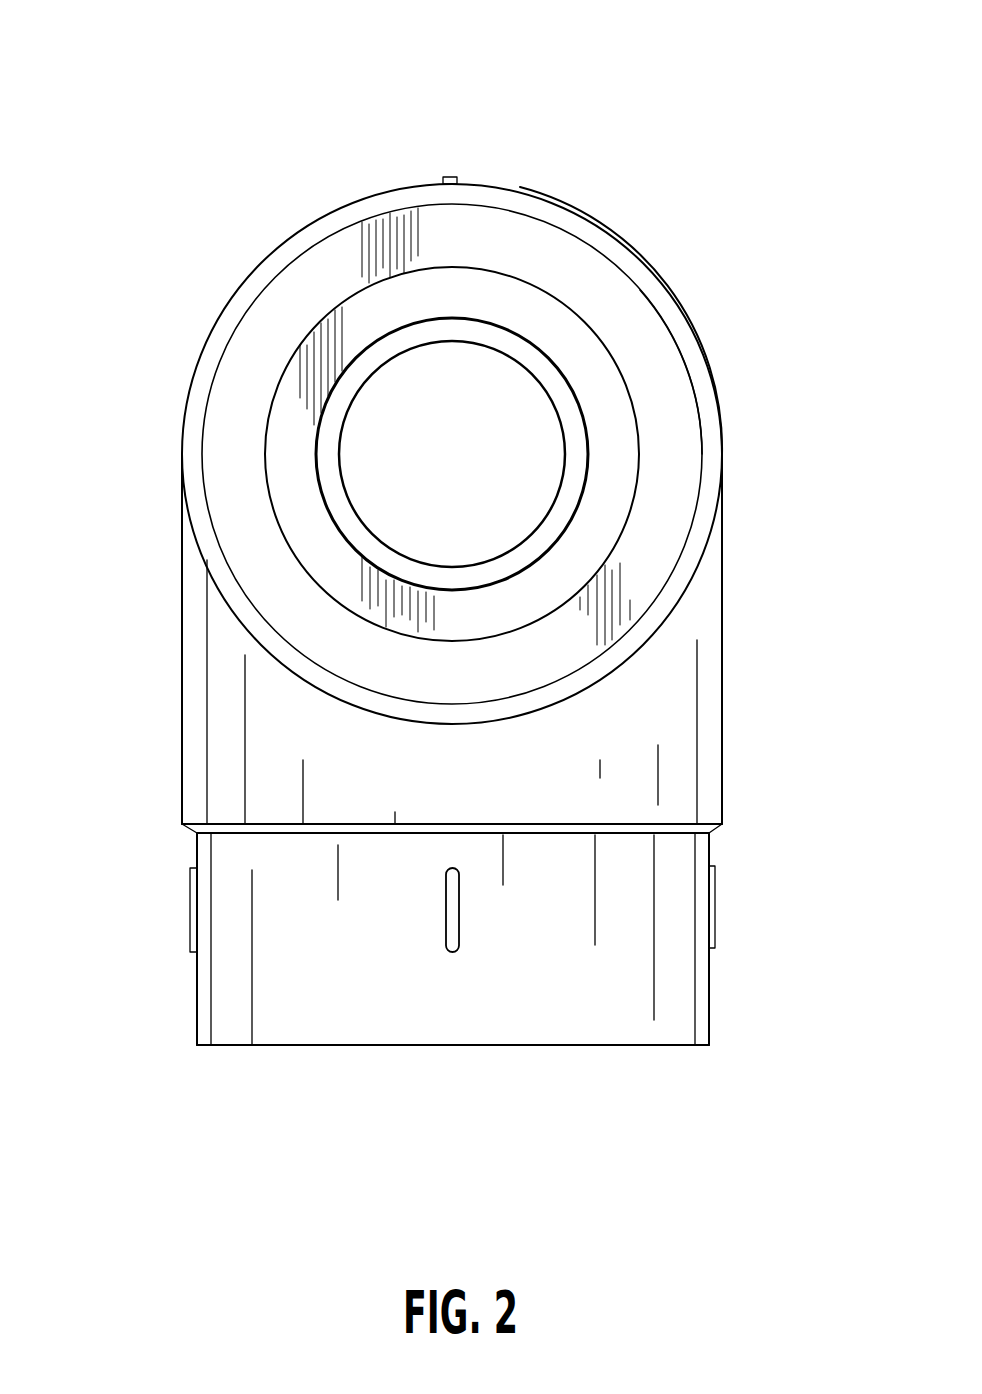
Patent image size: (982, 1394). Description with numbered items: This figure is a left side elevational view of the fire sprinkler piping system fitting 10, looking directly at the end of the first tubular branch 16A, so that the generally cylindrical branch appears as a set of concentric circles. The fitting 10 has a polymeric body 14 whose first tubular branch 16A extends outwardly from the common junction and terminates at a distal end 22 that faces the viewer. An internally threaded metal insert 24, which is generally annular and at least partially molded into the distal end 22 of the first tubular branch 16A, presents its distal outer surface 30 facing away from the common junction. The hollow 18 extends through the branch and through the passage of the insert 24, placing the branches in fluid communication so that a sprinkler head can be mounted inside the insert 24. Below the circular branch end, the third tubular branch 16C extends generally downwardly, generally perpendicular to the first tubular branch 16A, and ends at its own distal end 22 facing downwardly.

The fitting 10 is at (552, 172).
The polymeric body 14 is at (610, 277).
The first tubular branch 16A is at (647, 383).
The third tubular branch 16C is at (667, 903).
The hollow 18 is at (466, 474).
The distal end 22 is at (653, 533).
The internally threaded metal insert 24 is at (398, 295).
The distal outer surface 30 is at (290, 469).